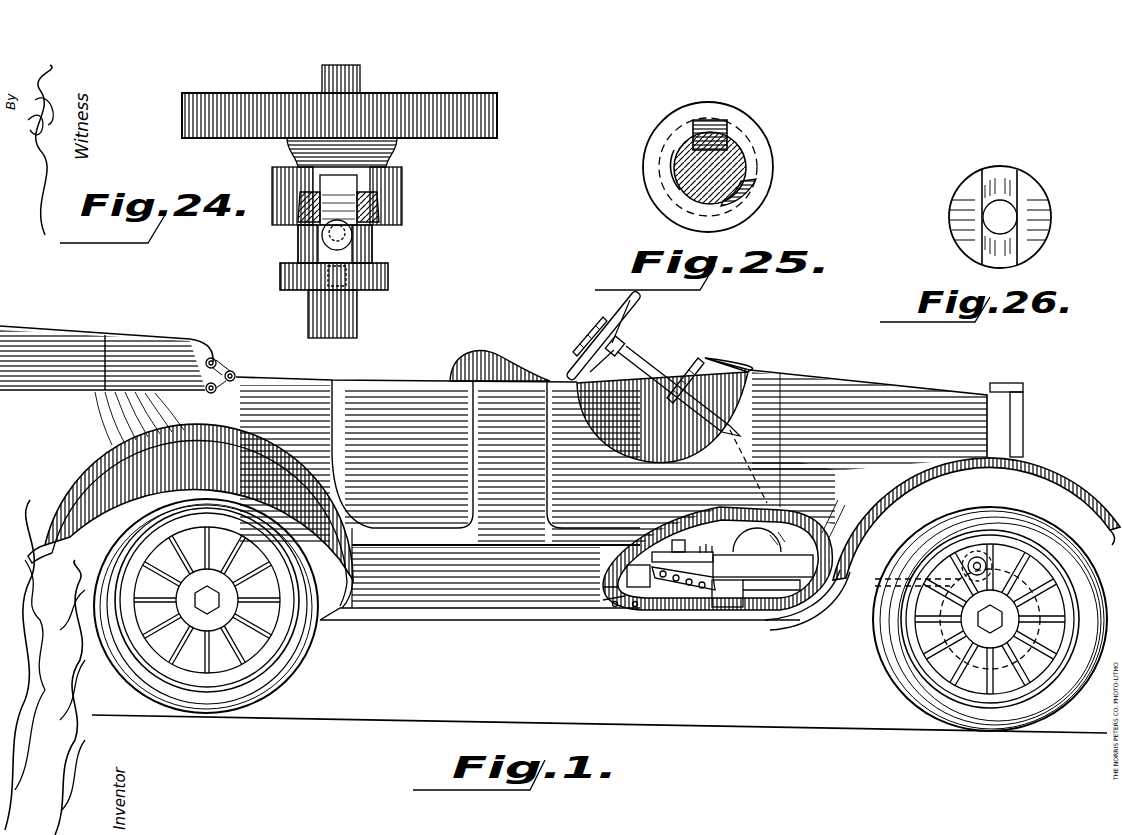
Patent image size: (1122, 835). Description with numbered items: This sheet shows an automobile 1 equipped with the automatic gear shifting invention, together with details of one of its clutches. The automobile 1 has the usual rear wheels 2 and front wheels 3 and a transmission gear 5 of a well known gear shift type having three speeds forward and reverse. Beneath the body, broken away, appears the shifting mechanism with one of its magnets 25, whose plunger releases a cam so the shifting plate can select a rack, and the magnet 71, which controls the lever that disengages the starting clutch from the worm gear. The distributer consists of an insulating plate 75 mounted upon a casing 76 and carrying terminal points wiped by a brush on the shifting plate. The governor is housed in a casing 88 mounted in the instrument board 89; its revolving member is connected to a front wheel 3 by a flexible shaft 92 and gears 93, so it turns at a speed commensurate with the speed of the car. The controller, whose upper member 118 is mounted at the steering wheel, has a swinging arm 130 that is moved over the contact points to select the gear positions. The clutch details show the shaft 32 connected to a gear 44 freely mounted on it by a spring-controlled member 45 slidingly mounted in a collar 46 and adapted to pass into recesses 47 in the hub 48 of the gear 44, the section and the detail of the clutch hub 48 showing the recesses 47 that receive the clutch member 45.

In FIG. 1, the automobile 1 is at (530, 395).
In FIG. 1, the rear wheels 2 is at (293, 655).
In FIG. 1, the front wheels 3 is at (883, 639).
In FIG. 1, the transmission gear 5 is at (640, 580).
In FIG. 24, the magnet 25 is at (334, 209).
In FIG. 1, the magnet 25 is at (677, 547).
In FIG. 24, the shaft 32 is at (357, 313).
In FIG. 25, the shaft 32 is at (700, 170).
In FIG. 24, the gear 44 is at (497, 119).
In FIG. 24, the spring-controlled clutch member 45 is at (350, 237).
In FIG. 25, the spring-controlled clutch member 45 is at (713, 135).
In FIG. 24, the collar 46 is at (305, 242).
In FIG. 25, the collar 46 is at (672, 157).
In FIG. 26, the recesses 47 is at (1000, 175).
In FIG. 24, the hub 48 is at (395, 168).
In FIG. 25, the hub 48 is at (760, 147).
In FIG. 26, the hub 48 is at (1030, 190).
In FIG. 1, the magnet 71 is at (837, 533).
In FIG. 1, the insulating plate 75 is at (713, 533).
In FIG. 1, the casing 76 is at (677, 573).
In FIG. 1, the casing 88 is at (700, 380).
In FIG. 1, the instrument board 89 is at (700, 360).
In FIG. 1, the flexible shaft 92 is at (770, 467).
In FIG. 1, the gears 93 is at (975, 556).
In FIG. 1, the upper member 118 is at (618, 312).
In FIG. 1, the swinging arm 130 is at (575, 350).